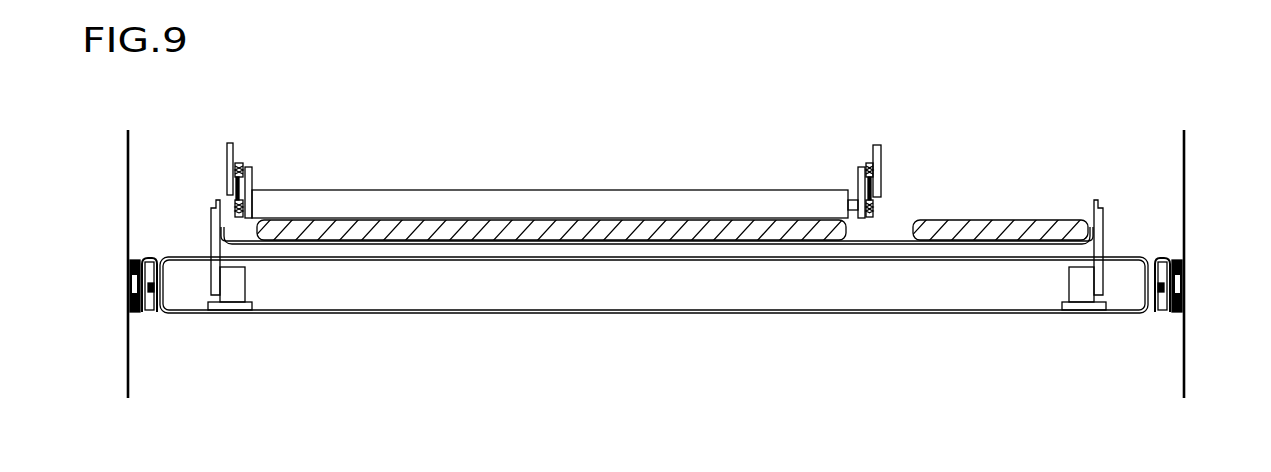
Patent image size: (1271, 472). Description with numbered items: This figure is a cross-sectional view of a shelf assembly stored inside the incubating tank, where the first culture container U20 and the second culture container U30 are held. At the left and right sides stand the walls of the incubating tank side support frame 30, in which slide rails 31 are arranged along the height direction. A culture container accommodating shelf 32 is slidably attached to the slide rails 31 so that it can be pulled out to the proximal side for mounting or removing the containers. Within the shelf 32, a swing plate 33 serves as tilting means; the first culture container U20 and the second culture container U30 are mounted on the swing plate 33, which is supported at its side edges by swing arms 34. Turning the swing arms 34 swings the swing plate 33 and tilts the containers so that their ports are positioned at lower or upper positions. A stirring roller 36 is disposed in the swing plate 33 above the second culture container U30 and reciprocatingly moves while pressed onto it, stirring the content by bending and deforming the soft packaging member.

The incubating tank side support frame 30 is at (128, 203).
The slide rail 31 is at (149, 300).
The culture container accommodating shelf 32 is at (520, 339).
The swing plate 33 is at (888, 243).
The swing arm 34 is at (210, 232).
The stirring roller 36 is at (740, 203).
The second culture container U30 is at (554, 232).
The first culture container U20 is at (1001, 232).